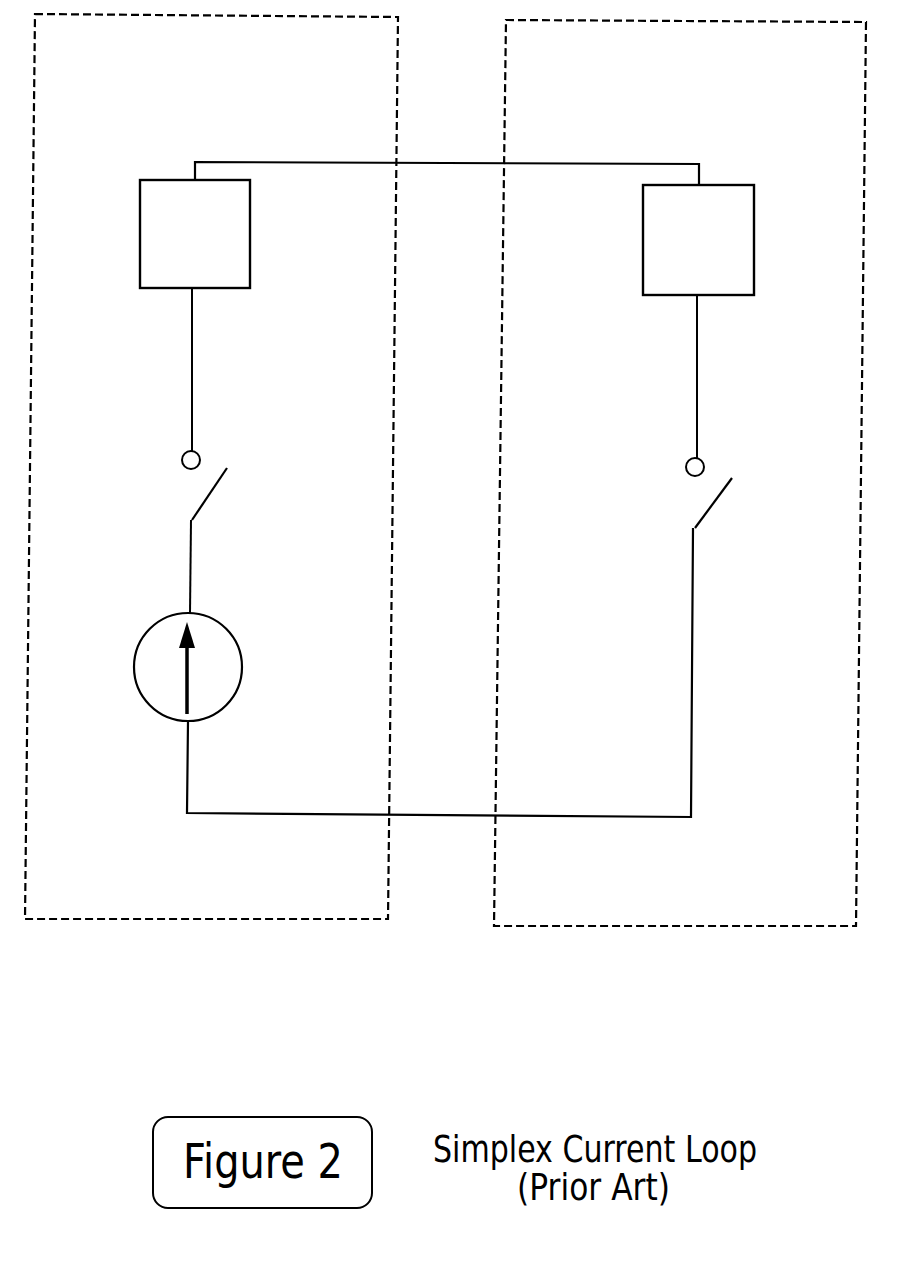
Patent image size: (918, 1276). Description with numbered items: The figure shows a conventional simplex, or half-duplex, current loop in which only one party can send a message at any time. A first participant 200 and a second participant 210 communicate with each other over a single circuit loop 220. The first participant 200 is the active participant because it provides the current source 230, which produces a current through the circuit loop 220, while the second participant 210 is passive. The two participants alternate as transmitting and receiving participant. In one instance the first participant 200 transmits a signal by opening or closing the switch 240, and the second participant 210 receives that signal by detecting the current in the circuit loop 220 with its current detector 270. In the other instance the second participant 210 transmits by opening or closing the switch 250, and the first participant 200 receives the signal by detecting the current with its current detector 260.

The first participant 200 is at (183, 930).
The second participant 210 is at (688, 937).
The circuit loop 220 is at (706, 693).
The current source 230 is at (122, 640).
The switch 240 is at (254, 491).
The switch 250 is at (668, 495).
The current detector 260 is at (161, 156).
The current detector 270 is at (726, 164).